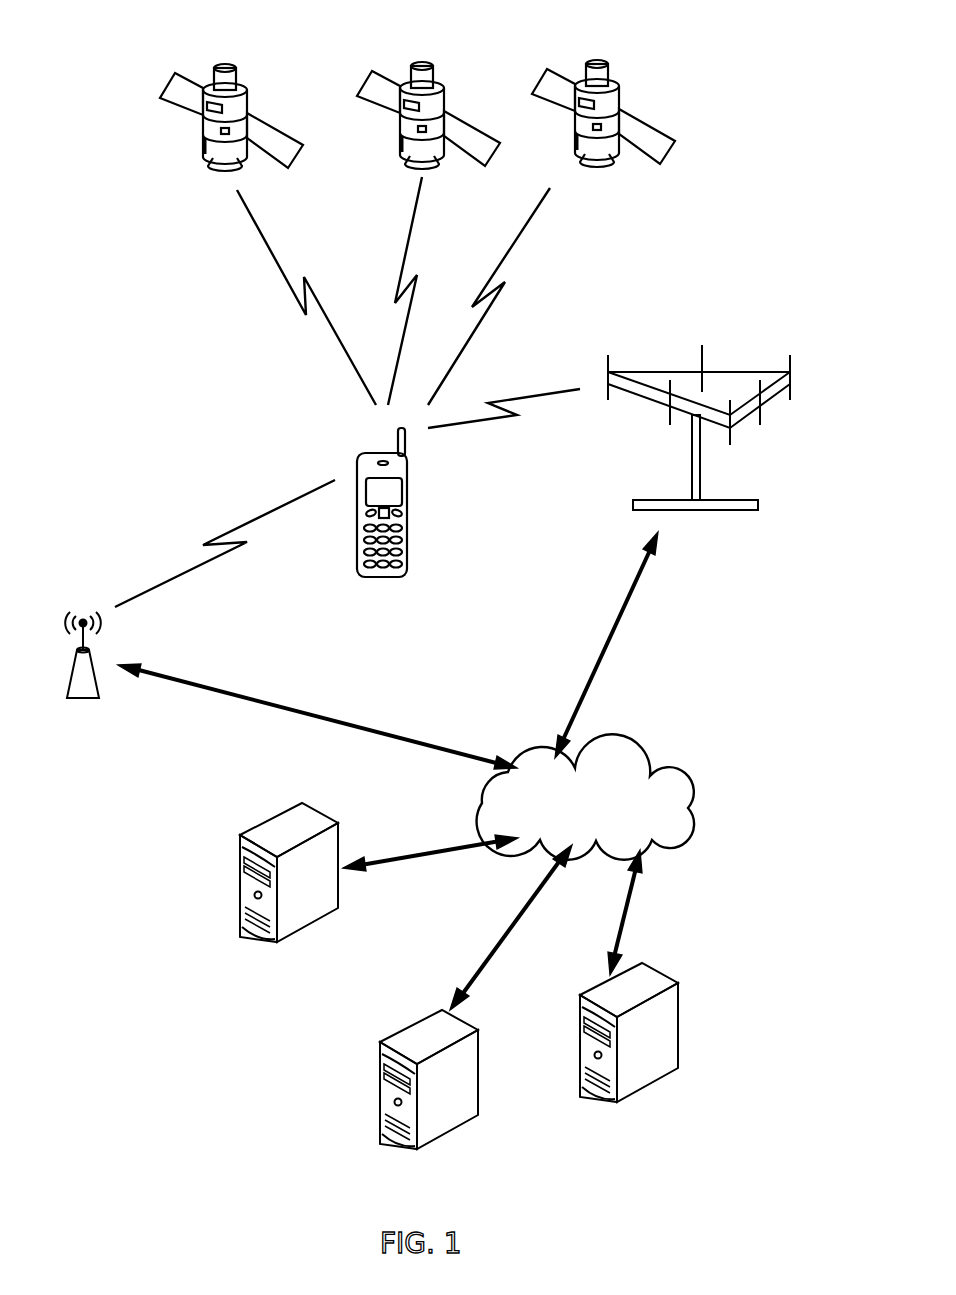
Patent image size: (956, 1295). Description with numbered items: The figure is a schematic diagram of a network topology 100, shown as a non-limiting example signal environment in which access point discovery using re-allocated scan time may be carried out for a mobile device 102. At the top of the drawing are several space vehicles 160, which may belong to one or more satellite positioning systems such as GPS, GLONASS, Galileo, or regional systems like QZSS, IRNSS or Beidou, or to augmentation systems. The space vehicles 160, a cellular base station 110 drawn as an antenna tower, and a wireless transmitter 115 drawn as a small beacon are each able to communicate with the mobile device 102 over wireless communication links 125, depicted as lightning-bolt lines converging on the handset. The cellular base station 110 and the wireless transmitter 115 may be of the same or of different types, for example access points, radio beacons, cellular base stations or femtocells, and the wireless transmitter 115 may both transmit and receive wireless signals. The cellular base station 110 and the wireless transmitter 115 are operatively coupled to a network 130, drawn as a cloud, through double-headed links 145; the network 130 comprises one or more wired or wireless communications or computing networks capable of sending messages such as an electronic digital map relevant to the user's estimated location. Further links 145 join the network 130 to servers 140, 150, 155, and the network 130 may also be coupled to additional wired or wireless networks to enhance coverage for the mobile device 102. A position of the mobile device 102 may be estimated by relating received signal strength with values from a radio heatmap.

The network topology 100 is at (755, 52).
The mobile device 102 is at (366, 455).
The cellular base station 110 is at (730, 511).
The wireless transmitter 115 is at (87, 700).
The wireless communication links 125 is at (268, 237).
The network 130 is at (672, 776).
The server 140 is at (303, 806).
The wireless communication links 145 is at (285, 712).
The server 150 is at (664, 986).
The server 155 is at (466, 1031).
The space vehicles 160 is at (130, 131).